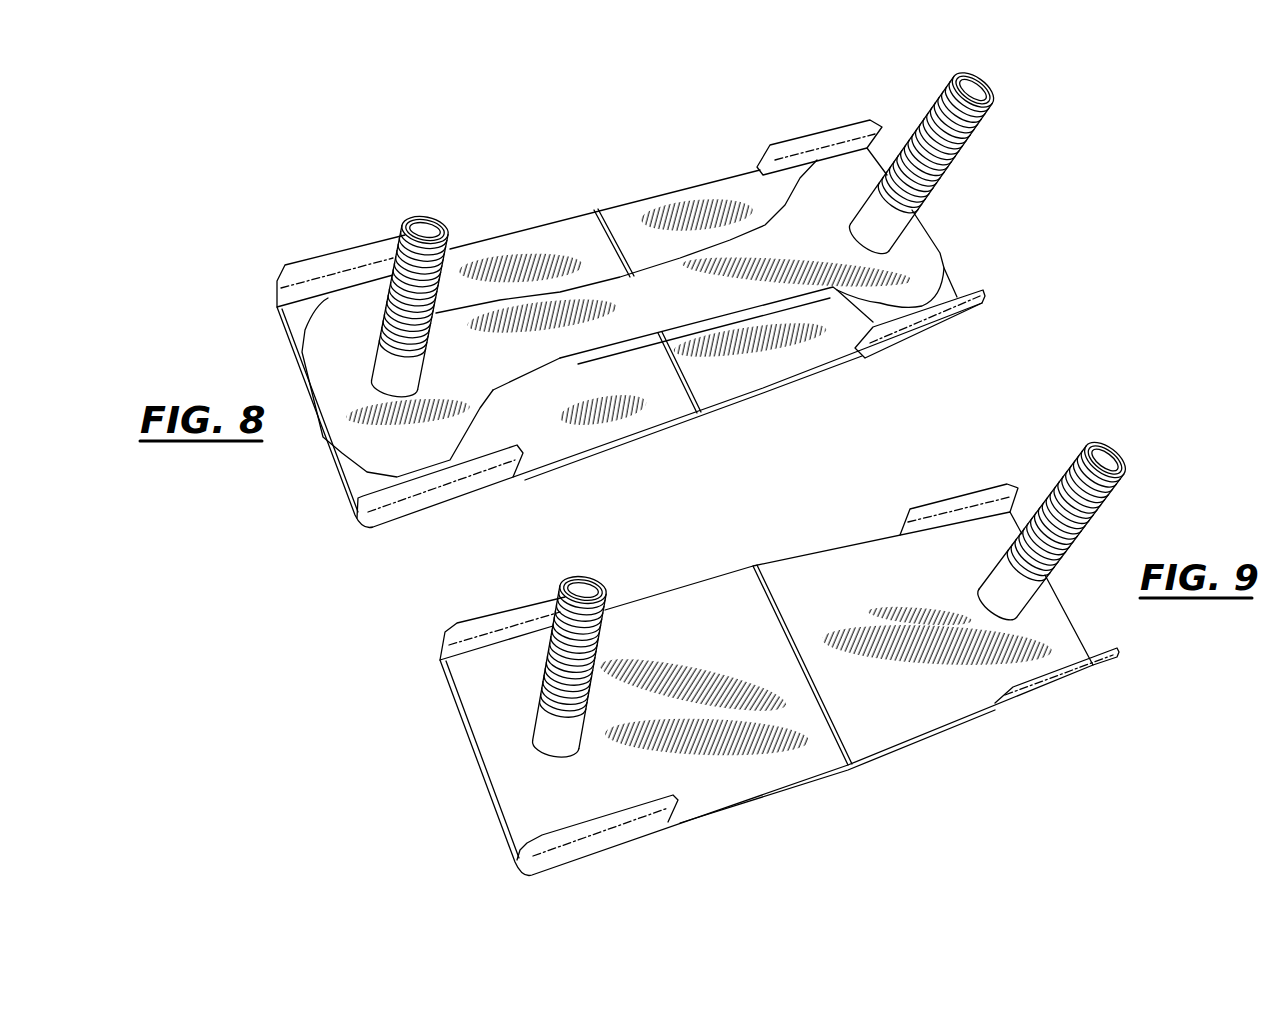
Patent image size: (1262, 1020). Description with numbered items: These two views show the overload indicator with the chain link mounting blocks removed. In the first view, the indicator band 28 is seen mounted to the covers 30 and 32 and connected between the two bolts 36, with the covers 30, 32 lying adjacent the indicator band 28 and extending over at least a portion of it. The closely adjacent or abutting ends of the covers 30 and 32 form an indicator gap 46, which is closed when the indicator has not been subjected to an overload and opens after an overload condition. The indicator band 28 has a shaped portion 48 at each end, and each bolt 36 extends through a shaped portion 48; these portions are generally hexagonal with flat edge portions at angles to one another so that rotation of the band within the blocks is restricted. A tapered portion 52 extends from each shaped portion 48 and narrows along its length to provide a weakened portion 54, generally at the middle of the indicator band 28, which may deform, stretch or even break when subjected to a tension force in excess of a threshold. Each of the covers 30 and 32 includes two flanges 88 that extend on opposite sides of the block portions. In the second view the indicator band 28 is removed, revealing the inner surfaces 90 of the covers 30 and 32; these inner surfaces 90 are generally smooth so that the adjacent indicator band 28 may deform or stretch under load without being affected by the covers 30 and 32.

In FIG. 8, the indicator band 28 is at (627, 202).
In FIG. 8, the cover 30 is at (707, 207).
In FIG. 9, the cover 30 is at (947, 712).
In FIG. 8, the cover 32 is at (550, 243).
In FIG. 9, the cover 32 is at (753, 780).
In FIG. 8, the bolt 36 is at (420, 222).
In FIG. 9, the bolt 36 is at (583, 590).
In FIG. 8, the indicator gap 46 is at (600, 207).
In FIG. 9, the indicator gap 46 is at (850, 762).
In FIG. 8, the shaped portion 48 is at (357, 422).
In FIG. 8, the tapered portion 52 is at (520, 347).
In FIG. 8, the weakened portion 54 is at (643, 303).
In FIG. 8, the flange 88 is at (342, 257).
In FIG. 9, the flange 88 is at (983, 490).
In FIG. 9, the inner surface 90 is at (843, 560).